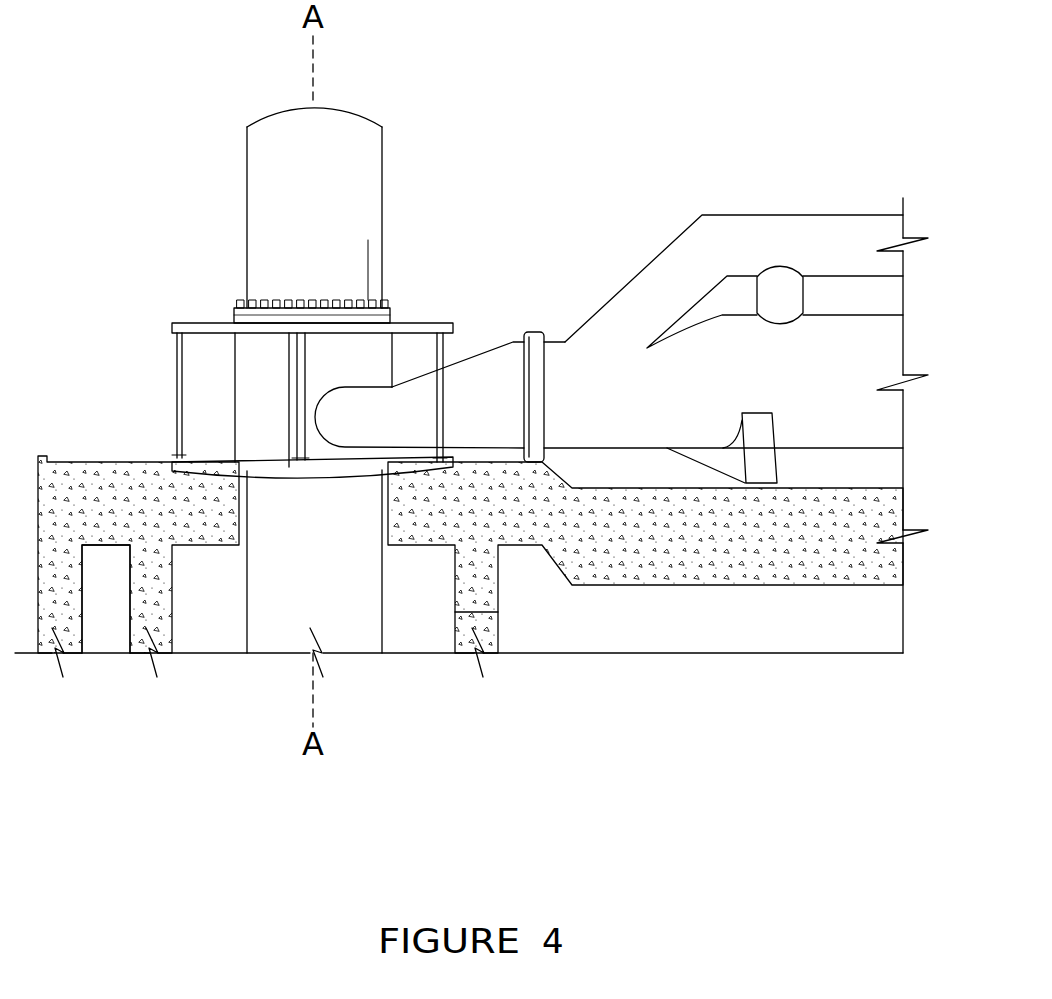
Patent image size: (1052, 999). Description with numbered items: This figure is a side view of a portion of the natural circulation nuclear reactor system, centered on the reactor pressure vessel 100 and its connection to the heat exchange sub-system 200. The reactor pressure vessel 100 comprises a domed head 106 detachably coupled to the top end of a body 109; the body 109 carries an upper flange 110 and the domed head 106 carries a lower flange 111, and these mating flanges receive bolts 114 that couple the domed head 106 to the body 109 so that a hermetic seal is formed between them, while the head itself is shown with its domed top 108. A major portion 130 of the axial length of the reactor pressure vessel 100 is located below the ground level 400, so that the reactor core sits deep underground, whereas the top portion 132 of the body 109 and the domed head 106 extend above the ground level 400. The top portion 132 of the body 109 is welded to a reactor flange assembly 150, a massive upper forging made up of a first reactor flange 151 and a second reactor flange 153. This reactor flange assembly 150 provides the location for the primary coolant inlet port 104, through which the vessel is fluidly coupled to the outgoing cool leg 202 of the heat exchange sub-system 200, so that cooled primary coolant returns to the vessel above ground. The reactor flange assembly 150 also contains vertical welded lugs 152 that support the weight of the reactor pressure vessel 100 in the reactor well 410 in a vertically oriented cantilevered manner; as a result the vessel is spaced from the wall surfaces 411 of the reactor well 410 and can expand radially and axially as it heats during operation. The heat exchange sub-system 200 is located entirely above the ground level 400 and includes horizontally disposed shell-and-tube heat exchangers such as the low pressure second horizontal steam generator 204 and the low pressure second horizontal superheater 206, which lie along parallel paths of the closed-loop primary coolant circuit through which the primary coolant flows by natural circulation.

The reactor pressure vessel 100 is at (276, 198).
The primary coolant inlet port 104 is at (350, 418).
The domed head 106 is at (373, 150).
The housing dome 108 is at (287, 110).
The body 109 is at (297, 610).
The upper flange 110 is at (393, 311).
The lower flange 111 is at (234, 317).
The bolts 114 is at (368, 245).
The major portion 130 is at (377, 622).
The top portion 132 is at (378, 348).
The reactor flange assembly 150 is at (172, 328).
The first reactor flange 151 is at (250, 465).
The vertical welded lugs 152 is at (289, 380).
The second reactor flange 153 is at (262, 328).
The heat exchange sub-system 200 is at (680, 195).
The outgoing cool leg 202 is at (410, 412).
The second horizontal steam generator 204 is at (836, 428).
The second horizontal superheater 206 is at (835, 230).
The ground level 400 is at (118, 452).
The reactor well 410 is at (205, 622).
The wall surfaces 411 is at (180, 603).